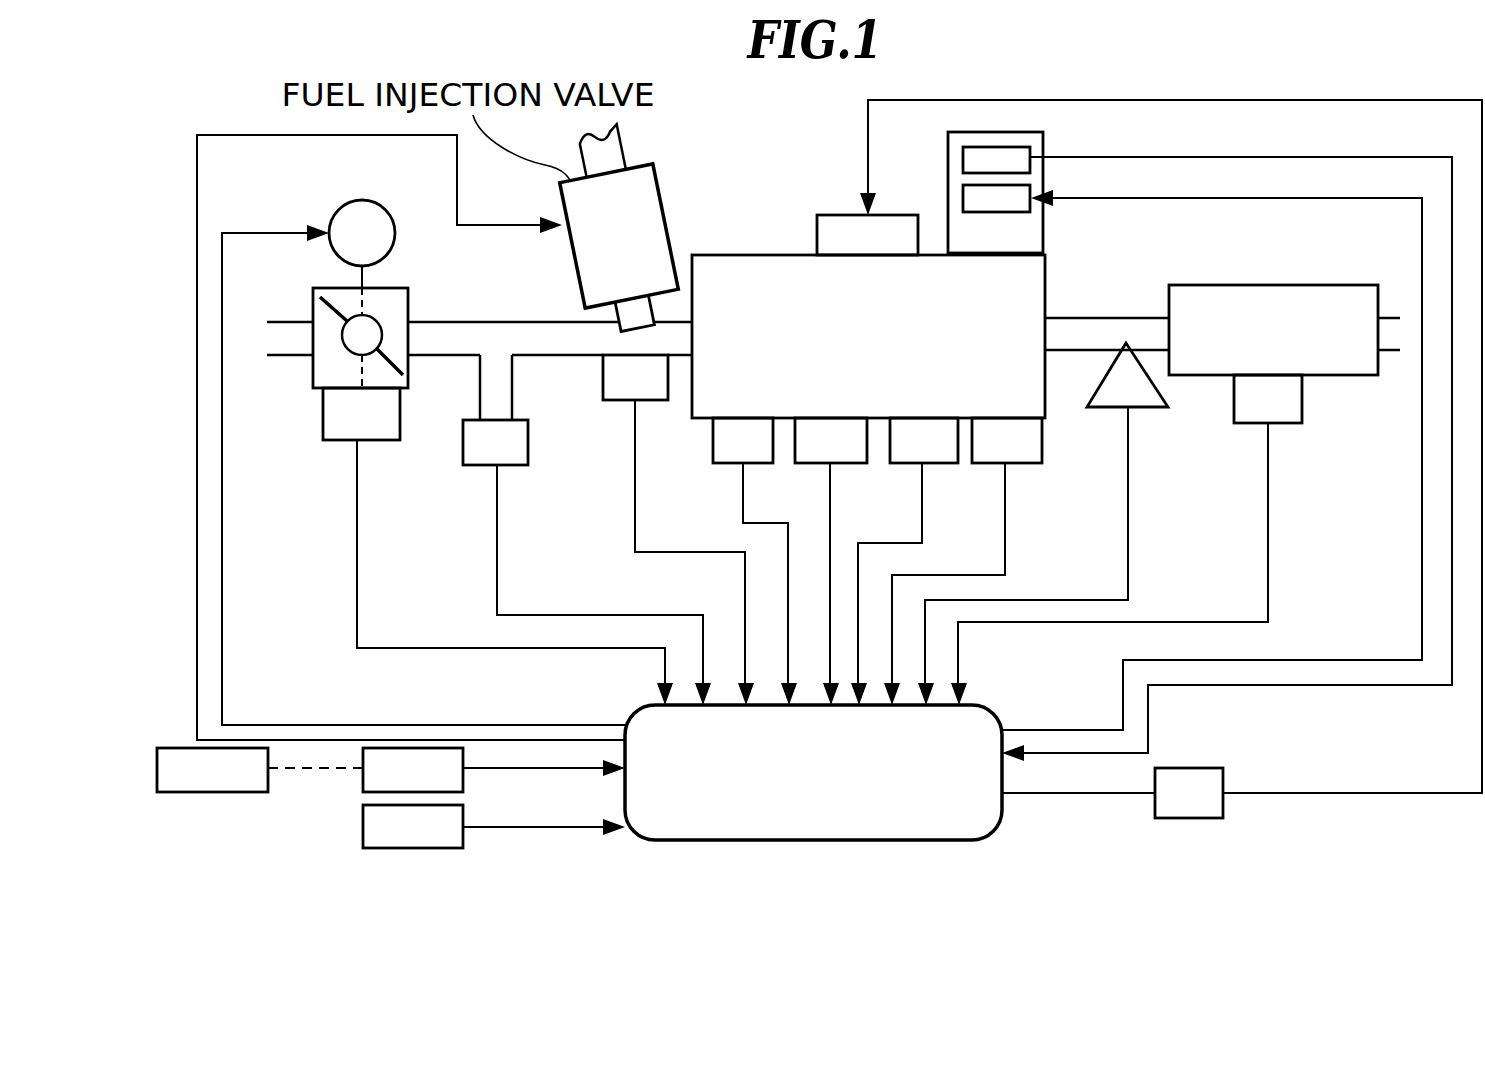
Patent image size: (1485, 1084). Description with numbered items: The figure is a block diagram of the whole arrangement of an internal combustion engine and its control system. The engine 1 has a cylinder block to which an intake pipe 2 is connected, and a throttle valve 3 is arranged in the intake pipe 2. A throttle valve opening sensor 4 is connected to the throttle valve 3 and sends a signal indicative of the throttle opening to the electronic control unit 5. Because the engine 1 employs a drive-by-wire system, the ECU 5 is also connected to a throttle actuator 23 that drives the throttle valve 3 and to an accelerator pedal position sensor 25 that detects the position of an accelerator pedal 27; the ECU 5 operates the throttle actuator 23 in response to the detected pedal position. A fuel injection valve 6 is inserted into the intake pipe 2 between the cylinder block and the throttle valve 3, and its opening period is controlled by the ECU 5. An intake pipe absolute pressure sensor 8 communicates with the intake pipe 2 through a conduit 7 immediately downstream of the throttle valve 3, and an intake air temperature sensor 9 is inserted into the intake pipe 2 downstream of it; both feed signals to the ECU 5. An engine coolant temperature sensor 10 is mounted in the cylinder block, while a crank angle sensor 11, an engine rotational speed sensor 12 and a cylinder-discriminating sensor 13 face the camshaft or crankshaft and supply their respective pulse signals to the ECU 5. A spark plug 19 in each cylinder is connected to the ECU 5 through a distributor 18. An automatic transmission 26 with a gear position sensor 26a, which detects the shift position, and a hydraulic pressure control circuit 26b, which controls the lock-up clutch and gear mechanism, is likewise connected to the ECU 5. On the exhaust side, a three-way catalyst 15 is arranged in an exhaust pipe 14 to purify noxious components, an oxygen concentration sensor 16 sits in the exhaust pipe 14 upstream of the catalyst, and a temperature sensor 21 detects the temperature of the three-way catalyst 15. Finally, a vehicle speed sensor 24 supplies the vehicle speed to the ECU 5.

The engine 1 is at (758, 255).
The intake pipe 2 is at (505, 320).
The throttle valve 3 is at (338, 312).
The throttle valve opening sensor 4 is at (403, 422).
The electronic control unit 5 is at (1000, 698).
The fuel injection valve 6 is at (660, 205).
The conduit 7 is at (512, 383).
The intake pipe absolute pressure sensor 8 is at (530, 437).
The intake air temperature sensor 9 is at (647, 403).
The engine coolant temperature sensor 10 is at (750, 463).
The crank angle sensor 11 is at (838, 463).
The engine rotational speed sensor 12 is at (925, 463).
The cylinder-discriminating sensor 13 is at (1005, 463).
The exhaust pipe 14 is at (1067, 353).
The three-way catalyst 15 is at (1256, 285).
The oxygen concentration sensor 16 is at (1150, 410).
The distributor 18 is at (1190, 768).
The spark plug 19 is at (900, 215).
The temperature sensor 21 is at (1280, 423).
The throttle actuator 23 is at (337, 207).
The vehicle speed sensor 24 is at (363, 822).
The accelerator pedal position sensor 25 is at (463, 780).
The automatic transmission 26 is at (1043, 226).
The gear position sensor 26a is at (1030, 152).
The hydraulic pressure control circuit 26b is at (1033, 203).
The accelerator pedal 27 is at (237, 792).